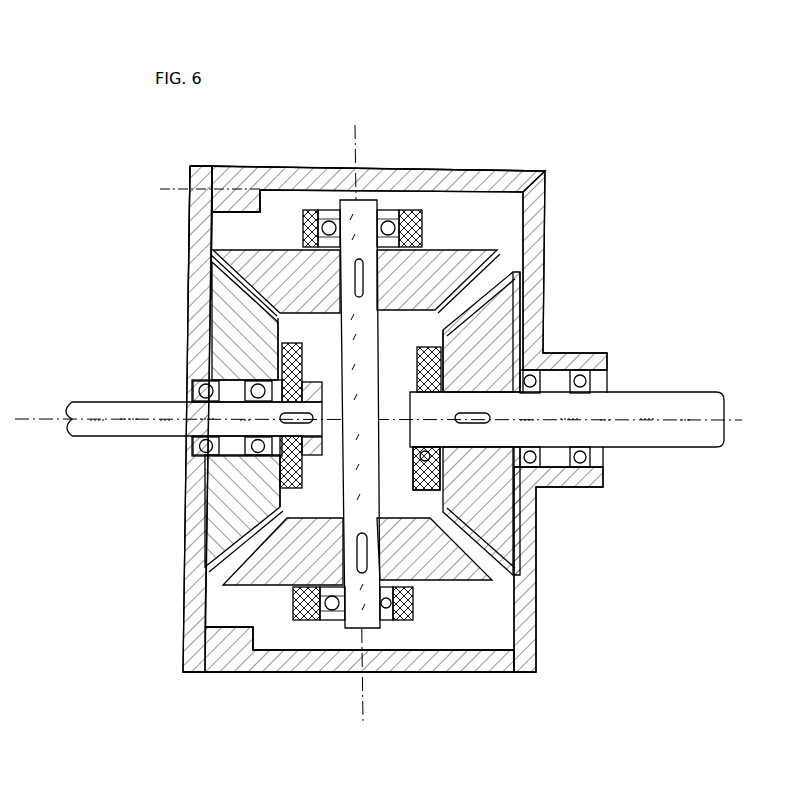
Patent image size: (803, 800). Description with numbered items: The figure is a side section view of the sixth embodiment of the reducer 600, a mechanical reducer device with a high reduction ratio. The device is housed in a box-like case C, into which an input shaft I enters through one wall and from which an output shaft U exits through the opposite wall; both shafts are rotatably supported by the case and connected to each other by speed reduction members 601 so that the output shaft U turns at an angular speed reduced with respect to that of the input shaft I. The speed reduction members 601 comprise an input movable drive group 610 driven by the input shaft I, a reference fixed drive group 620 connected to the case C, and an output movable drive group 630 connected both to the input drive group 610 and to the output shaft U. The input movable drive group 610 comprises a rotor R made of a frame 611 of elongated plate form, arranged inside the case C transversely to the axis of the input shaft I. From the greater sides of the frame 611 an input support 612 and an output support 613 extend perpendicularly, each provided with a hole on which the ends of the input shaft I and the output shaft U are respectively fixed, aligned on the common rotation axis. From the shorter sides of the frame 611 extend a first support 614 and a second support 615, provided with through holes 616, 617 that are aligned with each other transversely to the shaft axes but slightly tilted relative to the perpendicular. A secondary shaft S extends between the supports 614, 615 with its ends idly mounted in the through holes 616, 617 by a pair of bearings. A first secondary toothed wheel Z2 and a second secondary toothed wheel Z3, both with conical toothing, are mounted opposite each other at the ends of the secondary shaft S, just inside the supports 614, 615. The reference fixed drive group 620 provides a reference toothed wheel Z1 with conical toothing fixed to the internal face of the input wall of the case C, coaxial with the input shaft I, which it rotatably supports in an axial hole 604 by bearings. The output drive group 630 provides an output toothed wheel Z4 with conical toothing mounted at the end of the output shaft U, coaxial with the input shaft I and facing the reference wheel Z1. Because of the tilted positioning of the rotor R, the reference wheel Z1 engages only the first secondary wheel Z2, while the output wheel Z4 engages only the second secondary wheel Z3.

The reducer 600 is at (290, 112).
The speed reduction members 601 is at (230, 600).
The axial hole 604 is at (183, 382).
The input movable drive group 610 is at (280, 508).
The frame 611 is at (445, 328).
The input support 612 is at (212, 470).
The output support 613 is at (435, 500).
The first support 614 is at (313, 205).
The second support 615 is at (300, 625).
The through hole 616 is at (390, 200).
The through hole 617 is at (332, 622).
The reference fixed drive group 620 is at (182, 258).
The output movable drive group 630 is at (500, 345).
The box-like case C is at (195, 634).
The input shaft I is at (150, 405).
The output shaft U is at (617, 409).
The secondary shaft S is at (360, 222).
The rotor R is at (414, 600).
The reference toothed wheel Z1 is at (240, 323).
The first secondary toothed wheel Z2 is at (215, 250).
The second secondary toothed wheel Z3 is at (436, 553).
The output toothed wheel Z4 is at (495, 312).